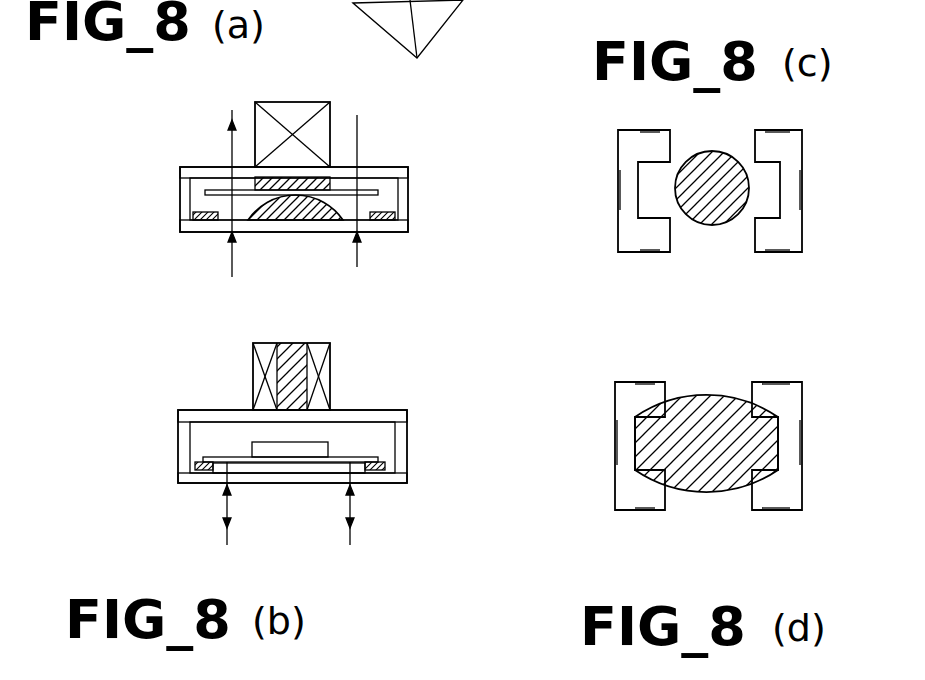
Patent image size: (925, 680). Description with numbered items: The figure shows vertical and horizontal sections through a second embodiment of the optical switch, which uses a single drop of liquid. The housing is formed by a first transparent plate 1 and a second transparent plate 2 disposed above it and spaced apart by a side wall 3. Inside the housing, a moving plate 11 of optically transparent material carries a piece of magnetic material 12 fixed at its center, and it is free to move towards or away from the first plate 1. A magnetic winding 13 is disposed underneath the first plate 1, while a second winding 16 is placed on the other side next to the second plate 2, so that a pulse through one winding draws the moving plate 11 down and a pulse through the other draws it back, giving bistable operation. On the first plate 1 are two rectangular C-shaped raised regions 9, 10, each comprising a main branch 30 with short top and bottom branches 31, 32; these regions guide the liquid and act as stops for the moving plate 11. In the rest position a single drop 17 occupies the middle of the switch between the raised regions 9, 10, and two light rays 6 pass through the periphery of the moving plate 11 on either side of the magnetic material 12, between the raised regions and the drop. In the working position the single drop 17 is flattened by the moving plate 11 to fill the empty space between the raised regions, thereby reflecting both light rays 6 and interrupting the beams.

In FIG. 8A, the transparent plate 1 is at (267, 225).
In FIG. 8B, the transparent plate 1 is at (328, 480).
In FIG. 8A, the second transparent plate 2 is at (205, 172).
In FIG. 8B, the second transparent plate 2 is at (357, 417).
In FIG. 8A, the side wall 3 is at (180, 197).
In FIG. 8B, the side wall 3 is at (400, 443).
In FIG. 8A, the light ray 6 is at (230, 265).
In FIG. 8B, the light ray 6 is at (223, 522).
In FIG. 8A, the raised region 9 is at (200, 220).
In FIG. 8B, the raised region 9 is at (190, 463).
In FIG. 8C, the raised region 9 is at (604, 209).
In FIG. 8D, the raised region 9 is at (603, 459).
In FIG. 8A, the raised region 10 is at (383, 220).
In FIG. 8B, the raised region 10 is at (403, 463).
In FIG. 8C, the raised region 10 is at (816, 213).
In FIG. 8D, the raised region 10 is at (816, 461).
In FIG. 8A, the moving plate 11 is at (370, 188).
In FIG. 8B, the moving plate 11 is at (343, 463).
In FIG. 8A, the magnetic material 12 is at (330, 187).
In FIG. 8B, the magnetic material 12 is at (270, 447).
In FIG. 8A, the magnetic winding 13 is at (430, 23).
In FIG. 8A, the second winding 16 is at (287, 106).
In FIG. 8B, the second winding 16 is at (287, 343).
In FIG. 8A, the drop 17 is at (293, 207).
In FIG. 8B, the drop 17 is at (277, 467).
In FIG. 8C, the drop 17 is at (712, 210).
In FIG. 8D, the drop 17 is at (715, 477).
In FIG. 8C, the main branch 30 is at (623, 187).
In FIG. 8D, the main branch 30 is at (622, 438).
In FIG. 8C, the top branch 31 is at (648, 143).
In FIG. 8D, the top branch 31 is at (648, 393).
In FIG. 8C, the bottom branch 32 is at (658, 235).
In FIG. 8D, the bottom branch 32 is at (655, 497).